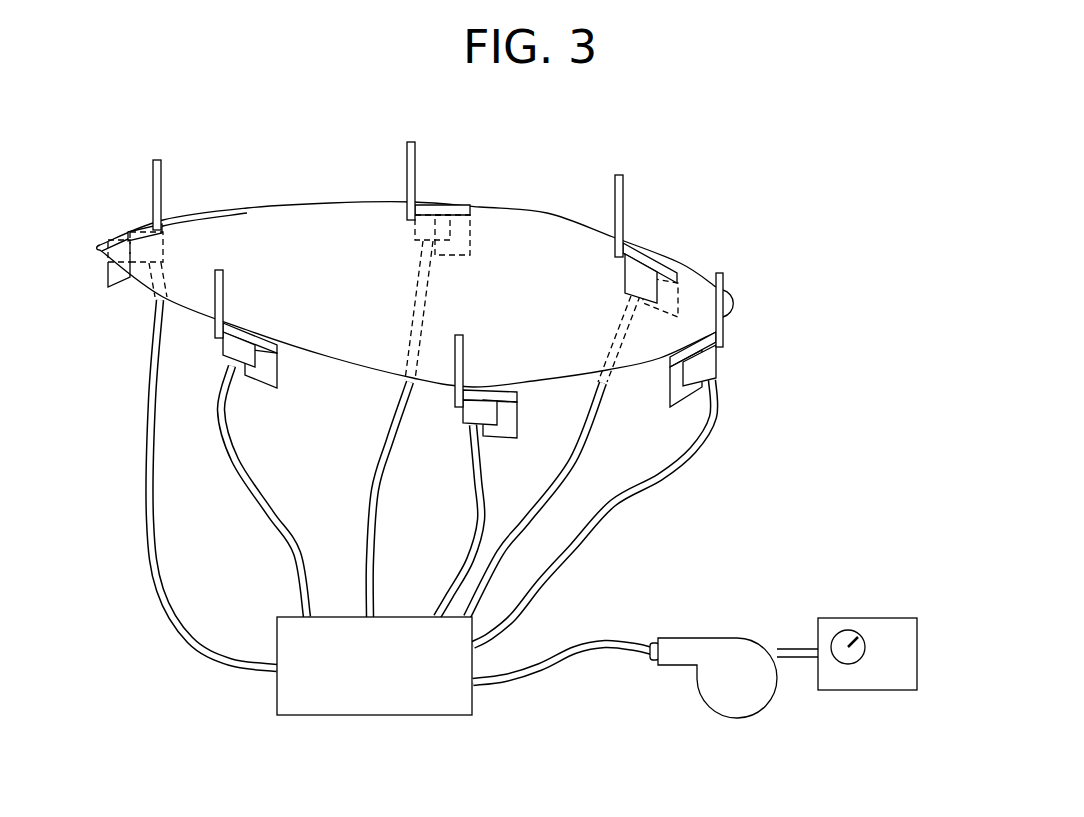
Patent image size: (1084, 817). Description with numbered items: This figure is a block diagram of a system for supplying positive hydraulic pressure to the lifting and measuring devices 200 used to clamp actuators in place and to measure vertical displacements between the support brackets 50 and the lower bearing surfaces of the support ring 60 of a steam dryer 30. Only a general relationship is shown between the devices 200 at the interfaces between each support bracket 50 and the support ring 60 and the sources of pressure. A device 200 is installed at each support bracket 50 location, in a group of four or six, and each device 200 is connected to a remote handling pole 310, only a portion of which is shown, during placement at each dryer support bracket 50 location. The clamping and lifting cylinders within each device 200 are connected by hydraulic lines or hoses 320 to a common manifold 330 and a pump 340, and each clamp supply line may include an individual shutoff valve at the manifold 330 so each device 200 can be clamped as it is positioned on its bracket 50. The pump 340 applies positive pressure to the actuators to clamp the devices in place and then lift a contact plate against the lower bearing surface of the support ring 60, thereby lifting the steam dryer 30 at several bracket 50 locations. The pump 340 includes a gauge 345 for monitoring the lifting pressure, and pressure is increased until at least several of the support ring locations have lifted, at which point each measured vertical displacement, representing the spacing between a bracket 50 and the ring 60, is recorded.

The steam dryer 30 is at (523, 318).
The support bracket 50 is at (104, 240).
The support ring 60 is at (158, 227).
The device 200 is at (157, 258).
The remote handling pole 310 is at (163, 178).
The hydraulic lines or hoses 320 is at (287, 543).
The manifold 330 is at (300, 716).
The pump 340 is at (733, 638).
The gauge 345 is at (848, 630).